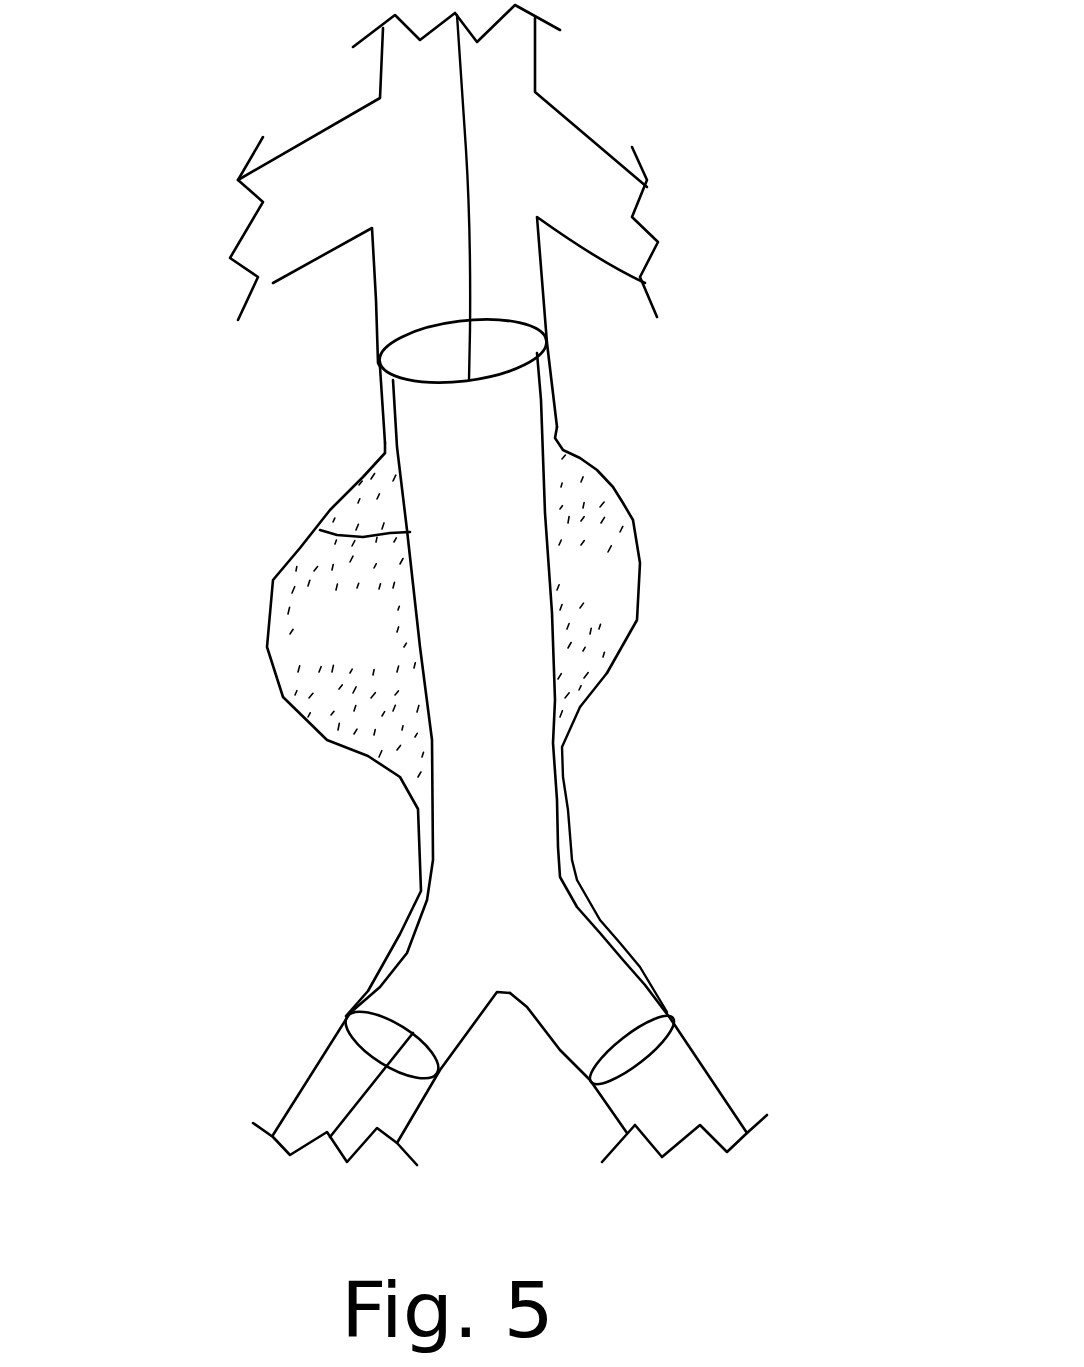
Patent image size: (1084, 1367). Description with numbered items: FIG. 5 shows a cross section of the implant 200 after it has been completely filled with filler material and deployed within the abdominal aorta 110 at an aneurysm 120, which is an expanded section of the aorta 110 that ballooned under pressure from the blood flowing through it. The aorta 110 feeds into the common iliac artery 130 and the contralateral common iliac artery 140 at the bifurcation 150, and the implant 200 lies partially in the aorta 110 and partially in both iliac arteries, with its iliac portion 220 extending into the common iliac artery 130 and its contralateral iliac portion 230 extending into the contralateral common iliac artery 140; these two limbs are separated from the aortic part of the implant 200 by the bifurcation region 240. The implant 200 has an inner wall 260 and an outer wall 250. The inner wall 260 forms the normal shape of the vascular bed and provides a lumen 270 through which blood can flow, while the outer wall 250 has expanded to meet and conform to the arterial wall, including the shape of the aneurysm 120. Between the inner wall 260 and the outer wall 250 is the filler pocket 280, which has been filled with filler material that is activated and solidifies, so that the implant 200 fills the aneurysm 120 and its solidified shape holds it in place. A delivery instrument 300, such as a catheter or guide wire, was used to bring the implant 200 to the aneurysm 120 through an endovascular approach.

The abdominal aorta 110 is at (349, 224).
The aneurysm 120 is at (731, 550).
The common iliac artery 130 is at (245, 1088).
The contralateral common iliac artery 140 is at (777, 1070).
The bifurcation 150 is at (711, 765).
The implant 200 is at (655, 737).
The iliac portion 220 is at (325, 1037).
The contralateral iliac portion 230 is at (706, 995).
The bifurcation region 240 is at (714, 839).
The outer wall 250 is at (259, 729).
The inner wall 260 is at (251, 503).
The lumen 270 is at (525, 633).
The filler pocket 280 is at (375, 657).
The delivery instrument 300 is at (485, 288).